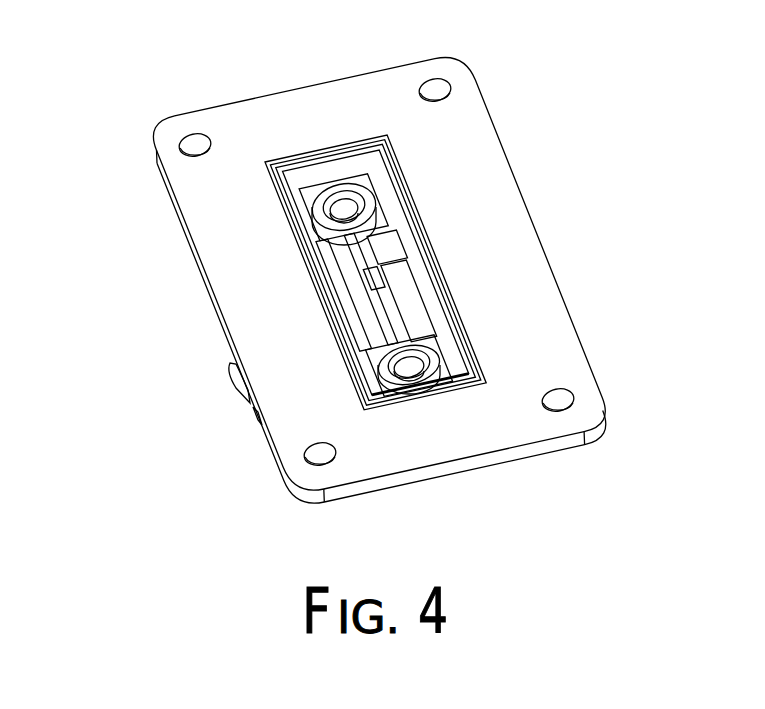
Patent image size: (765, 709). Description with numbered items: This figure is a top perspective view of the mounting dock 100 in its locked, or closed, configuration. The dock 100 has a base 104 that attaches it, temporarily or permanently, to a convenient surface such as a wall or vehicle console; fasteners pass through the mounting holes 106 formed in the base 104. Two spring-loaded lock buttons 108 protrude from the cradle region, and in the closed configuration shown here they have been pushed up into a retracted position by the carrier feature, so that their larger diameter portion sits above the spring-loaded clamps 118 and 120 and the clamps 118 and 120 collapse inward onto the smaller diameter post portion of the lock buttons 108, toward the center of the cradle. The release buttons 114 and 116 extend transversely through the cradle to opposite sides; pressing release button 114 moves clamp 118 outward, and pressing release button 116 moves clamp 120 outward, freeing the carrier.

The mounting dock 100 is at (150, 45).
The base 104 is at (543, 453).
The mounting holes 106 is at (446, 82).
The lock buttons 108 is at (362, 208).
The release button 114 is at (350, 292).
The release button 116 is at (227, 377).
The spring-loaded clamp 118 is at (350, 308).
The spring-loaded clamp 120 is at (443, 298).